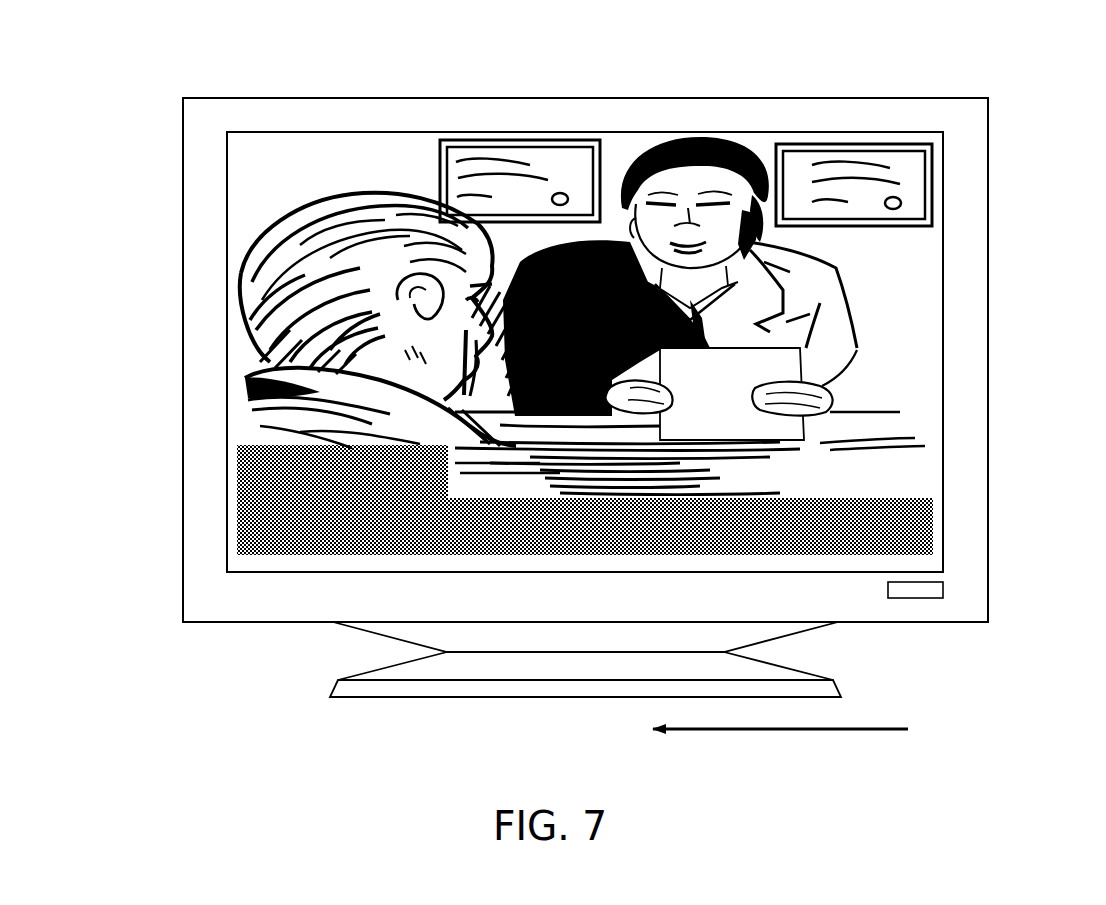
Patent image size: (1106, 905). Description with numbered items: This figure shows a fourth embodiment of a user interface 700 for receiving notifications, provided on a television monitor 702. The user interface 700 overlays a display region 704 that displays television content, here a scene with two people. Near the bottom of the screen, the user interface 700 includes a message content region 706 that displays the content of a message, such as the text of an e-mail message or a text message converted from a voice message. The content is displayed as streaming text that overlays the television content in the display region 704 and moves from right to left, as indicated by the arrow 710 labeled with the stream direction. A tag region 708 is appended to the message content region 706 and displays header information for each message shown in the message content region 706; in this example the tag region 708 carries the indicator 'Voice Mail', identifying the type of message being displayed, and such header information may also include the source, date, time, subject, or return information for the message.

The user interface 700 is at (922, 523).
The television monitor 702 is at (342, 98).
The display region 704 is at (612, 160).
The message content region 706 is at (400, 545).
The tag region 708 is at (243, 468).
The arrow 710 is at (885, 731).